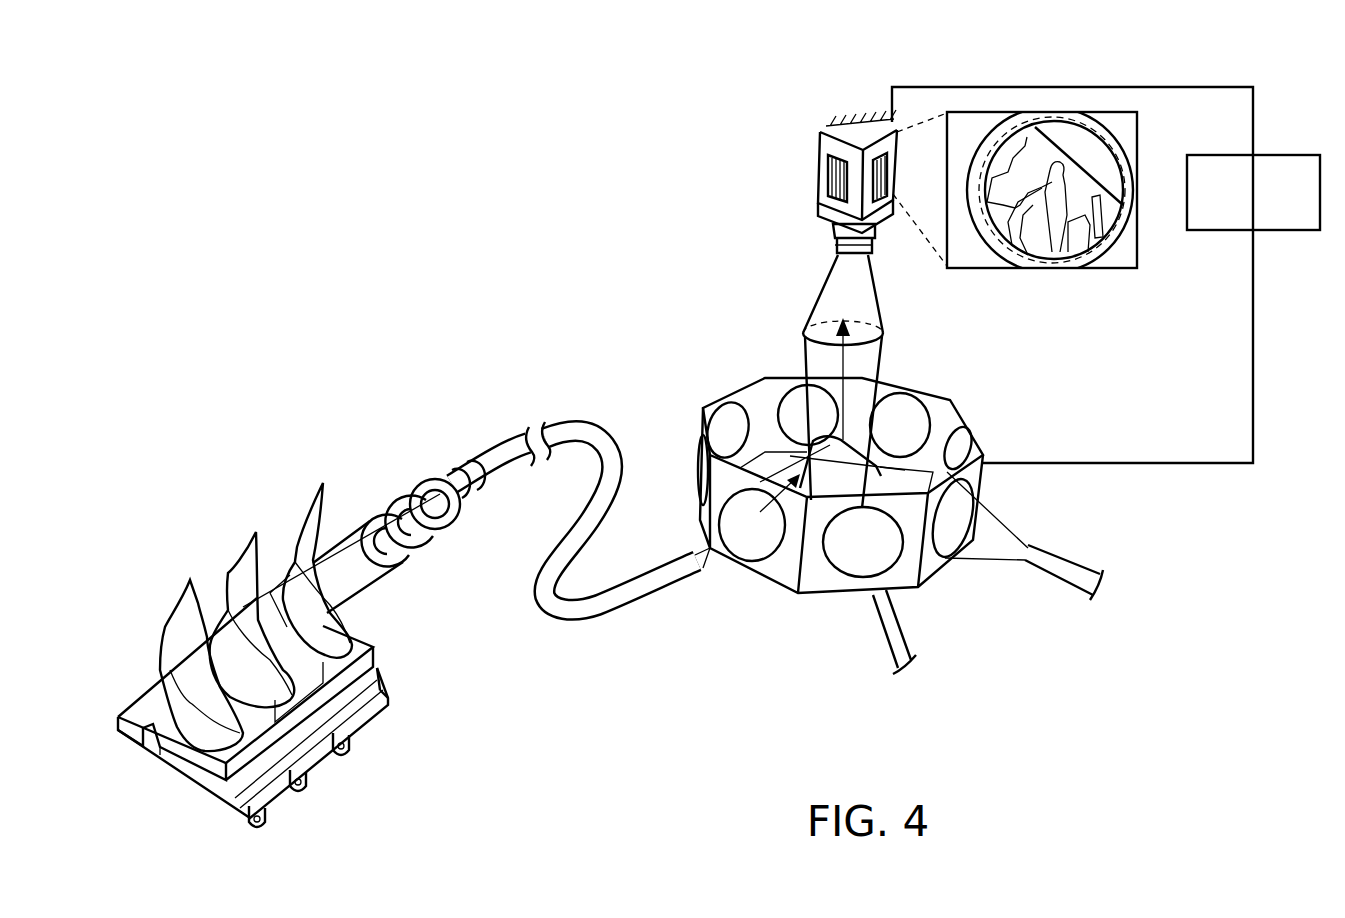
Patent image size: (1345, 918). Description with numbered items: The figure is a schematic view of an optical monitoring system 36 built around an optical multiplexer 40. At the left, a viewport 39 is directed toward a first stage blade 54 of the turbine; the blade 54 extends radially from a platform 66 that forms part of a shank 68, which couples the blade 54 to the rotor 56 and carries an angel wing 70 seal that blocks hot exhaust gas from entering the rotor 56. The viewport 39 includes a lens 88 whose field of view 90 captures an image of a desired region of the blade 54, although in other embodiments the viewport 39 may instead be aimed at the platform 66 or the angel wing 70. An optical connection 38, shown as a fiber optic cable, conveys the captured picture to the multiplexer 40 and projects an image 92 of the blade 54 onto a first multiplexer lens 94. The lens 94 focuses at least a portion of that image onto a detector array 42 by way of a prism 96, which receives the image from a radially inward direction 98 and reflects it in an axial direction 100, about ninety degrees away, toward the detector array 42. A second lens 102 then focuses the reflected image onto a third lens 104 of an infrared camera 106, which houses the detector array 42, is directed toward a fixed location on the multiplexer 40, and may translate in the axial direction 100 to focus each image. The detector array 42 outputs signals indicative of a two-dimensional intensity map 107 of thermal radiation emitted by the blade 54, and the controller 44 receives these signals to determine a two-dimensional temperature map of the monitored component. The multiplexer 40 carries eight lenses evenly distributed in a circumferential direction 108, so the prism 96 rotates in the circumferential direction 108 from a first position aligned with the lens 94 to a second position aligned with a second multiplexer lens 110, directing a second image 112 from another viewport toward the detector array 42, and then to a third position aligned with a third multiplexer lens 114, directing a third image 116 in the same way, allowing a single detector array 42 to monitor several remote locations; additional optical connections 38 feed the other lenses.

The optical monitoring system 36 is at (790, 333).
The optical connection 38 is at (586, 422).
The viewport 39 is at (456, 540).
The optical multiplexer 40 is at (1007, 363).
The detector array 42 is at (808, 114).
The controller 44 is at (1293, 156).
The first stage blade 54 is at (251, 575).
The rotor 56 is at (302, 786).
The platform 66 is at (308, 683).
The shank 68 is at (347, 785).
The angel wing 70 is at (378, 679).
The lens 88 is at (432, 482).
The field of view 90 is at (338, 545).
The image 92 is at (724, 568).
The lens 94 is at (742, 508).
The prism 96 is at (860, 478).
The radially inward direction 98 is at (768, 483).
The axial direction 100 is at (853, 378).
The second lens 102 is at (886, 333).
The third lens 104 is at (834, 243).
The infrared camera 106 is at (818, 166).
The two-dimensional intensity map 107 is at (1140, 130).
The circumferential direction 108 is at (884, 448).
The second multiplexer lens 110 is at (882, 540).
The second image 112 is at (872, 594).
The third multiplexer lens 114 is at (962, 508).
The third image 116 is at (1023, 538).